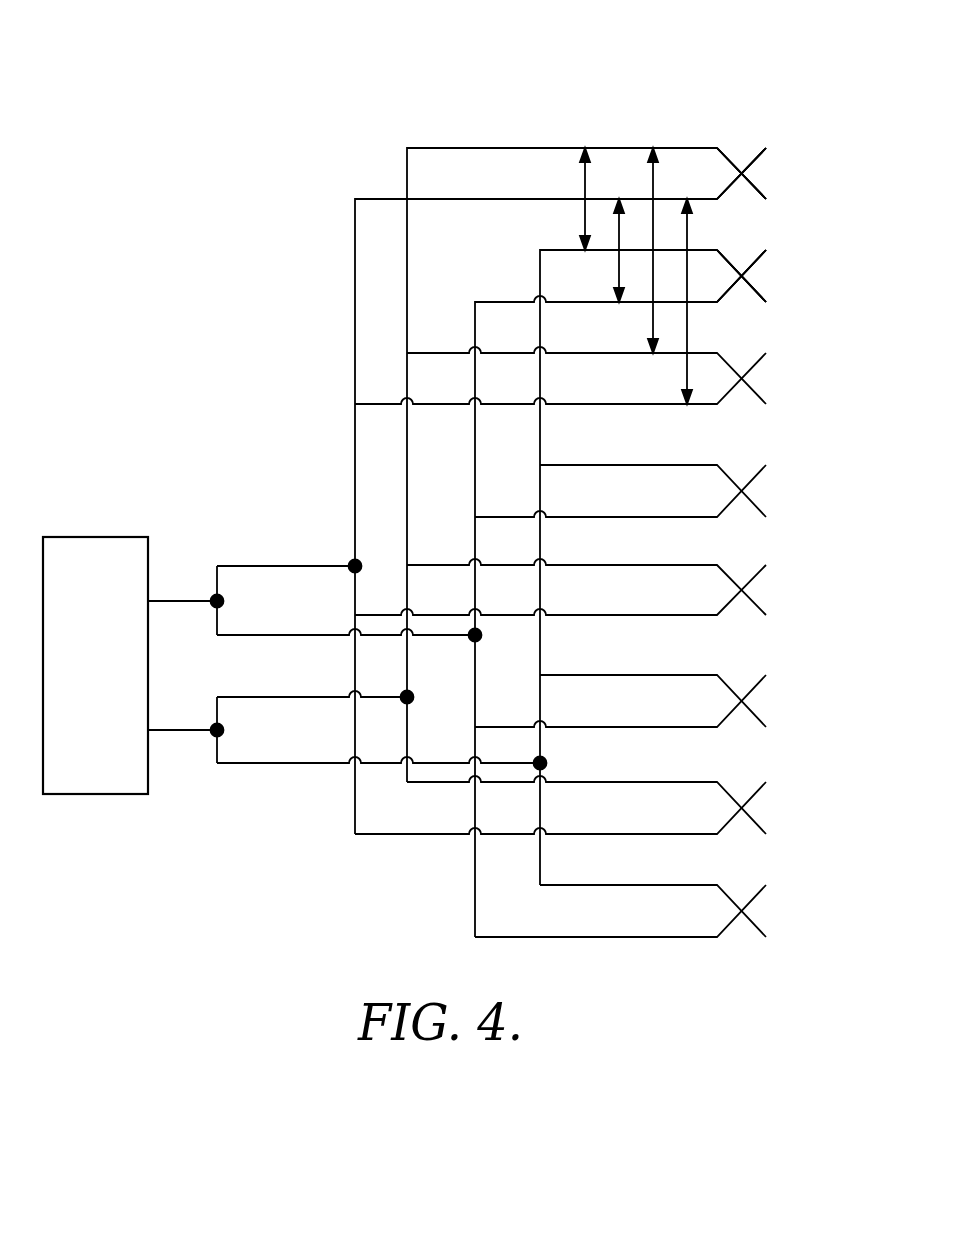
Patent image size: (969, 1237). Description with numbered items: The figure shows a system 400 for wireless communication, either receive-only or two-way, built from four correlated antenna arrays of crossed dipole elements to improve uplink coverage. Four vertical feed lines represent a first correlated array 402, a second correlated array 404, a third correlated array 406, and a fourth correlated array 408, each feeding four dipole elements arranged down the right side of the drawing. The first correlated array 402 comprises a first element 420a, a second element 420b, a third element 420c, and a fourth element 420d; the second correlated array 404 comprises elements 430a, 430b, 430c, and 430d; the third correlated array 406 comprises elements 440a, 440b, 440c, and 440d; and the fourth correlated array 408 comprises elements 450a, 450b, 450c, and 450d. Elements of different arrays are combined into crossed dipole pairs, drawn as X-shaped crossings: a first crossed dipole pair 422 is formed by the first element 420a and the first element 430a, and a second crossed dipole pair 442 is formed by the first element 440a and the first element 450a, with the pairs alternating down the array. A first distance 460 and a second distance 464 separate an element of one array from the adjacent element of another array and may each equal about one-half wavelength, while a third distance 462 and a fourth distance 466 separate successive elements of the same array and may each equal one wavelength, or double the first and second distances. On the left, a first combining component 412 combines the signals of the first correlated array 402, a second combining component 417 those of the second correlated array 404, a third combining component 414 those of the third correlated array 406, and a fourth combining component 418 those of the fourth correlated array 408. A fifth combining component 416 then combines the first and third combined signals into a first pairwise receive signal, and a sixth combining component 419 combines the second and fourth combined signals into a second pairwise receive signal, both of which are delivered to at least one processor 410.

The system 400 is at (122, 280).
The first correlated array 402 is at (343, 209).
The second correlated array 404 is at (391, 156).
The third correlated array 406 is at (458, 308).
The fourth correlated array 408 is at (514, 258).
The processor 410 is at (93, 537).
The first combining component 412 is at (351, 561).
The third combining component 414 is at (481, 632).
The fifth combining component 416 is at (214, 606).
The second combining component 417 is at (412, 694).
The fourth combining component 418 is at (544, 760).
The sixth combining component 419 is at (214, 735).
The first element 420a is at (764, 149).
The second element 420b is at (764, 354).
The third element 420c is at (764, 566).
The fourth element 420d is at (764, 783).
The first element 430a is at (764, 197).
The second element 430b is at (764, 402).
The third element 430c is at (764, 613).
The fourth element 430d is at (764, 832).
The first element 440a is at (764, 252).
The second element 440b is at (764, 466).
The third element 440c is at (764, 676).
The fourth element 440d is at (764, 886).
The first element 450a is at (764, 300).
The second element 450b is at (764, 515).
The third element 450c is at (764, 725).
The fourth element 450d is at (764, 935).
The first crossed dipole pair 422 is at (742, 136).
The second crossed dipole pair 442 is at (752, 238).
The first distance 460 is at (584, 181).
The third distance 462 is at (653, 319).
The second distance 464 is at (616, 271).
The fourth distance 466 is at (688, 231).